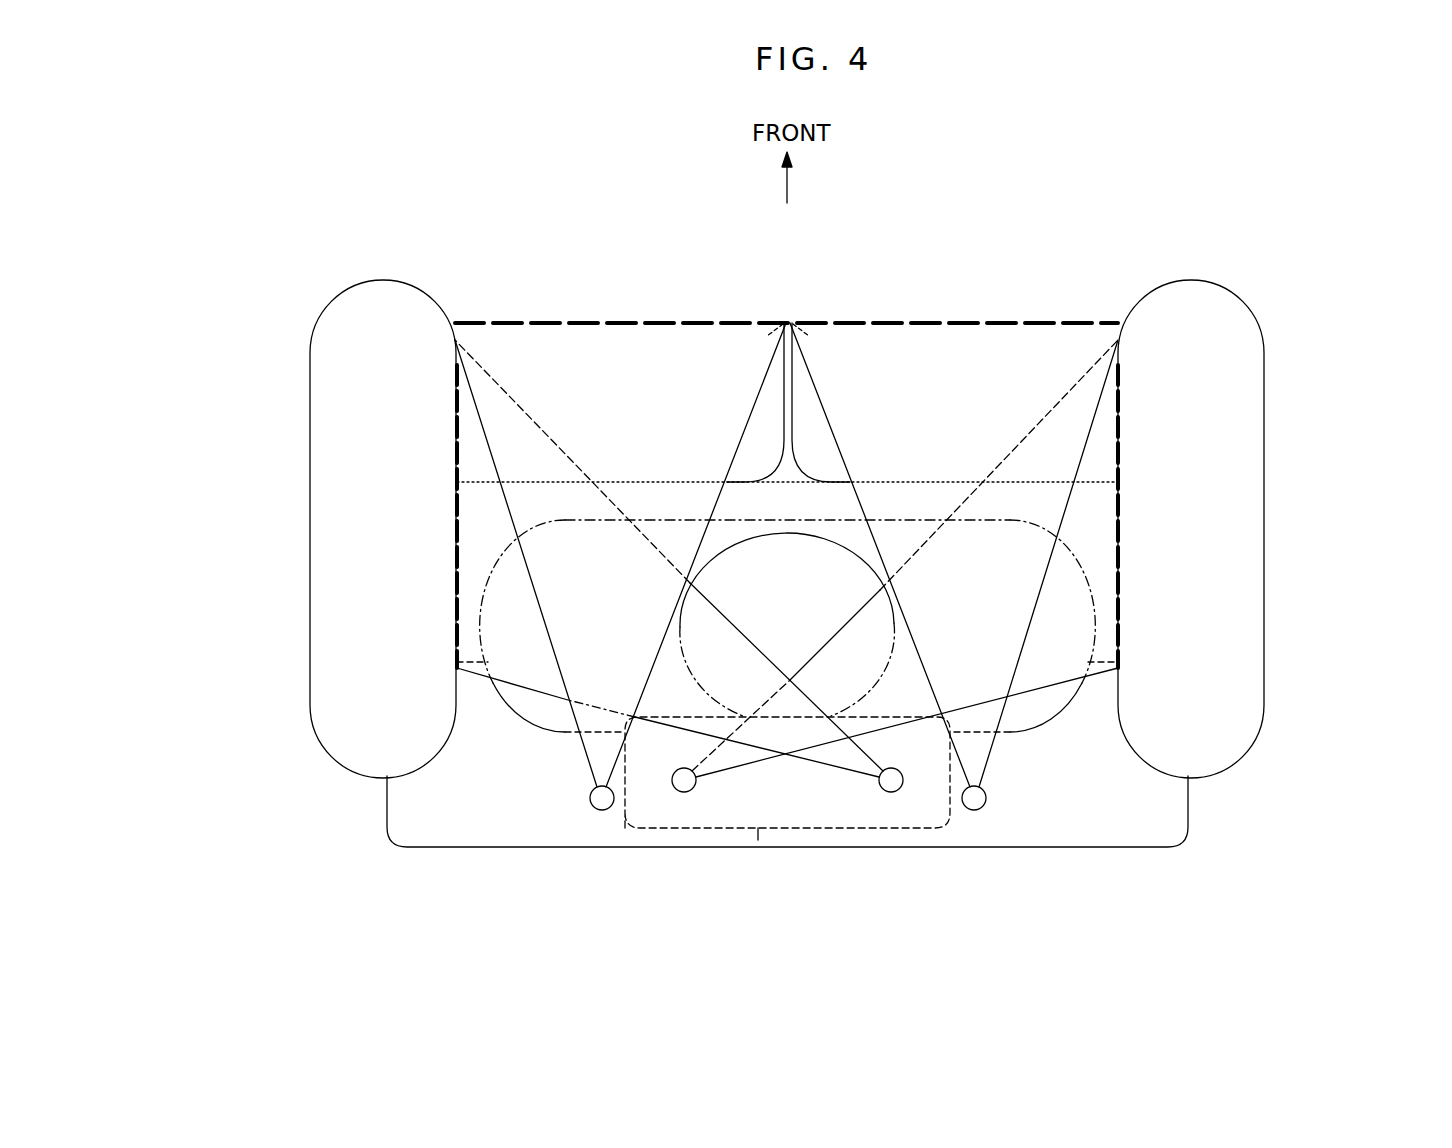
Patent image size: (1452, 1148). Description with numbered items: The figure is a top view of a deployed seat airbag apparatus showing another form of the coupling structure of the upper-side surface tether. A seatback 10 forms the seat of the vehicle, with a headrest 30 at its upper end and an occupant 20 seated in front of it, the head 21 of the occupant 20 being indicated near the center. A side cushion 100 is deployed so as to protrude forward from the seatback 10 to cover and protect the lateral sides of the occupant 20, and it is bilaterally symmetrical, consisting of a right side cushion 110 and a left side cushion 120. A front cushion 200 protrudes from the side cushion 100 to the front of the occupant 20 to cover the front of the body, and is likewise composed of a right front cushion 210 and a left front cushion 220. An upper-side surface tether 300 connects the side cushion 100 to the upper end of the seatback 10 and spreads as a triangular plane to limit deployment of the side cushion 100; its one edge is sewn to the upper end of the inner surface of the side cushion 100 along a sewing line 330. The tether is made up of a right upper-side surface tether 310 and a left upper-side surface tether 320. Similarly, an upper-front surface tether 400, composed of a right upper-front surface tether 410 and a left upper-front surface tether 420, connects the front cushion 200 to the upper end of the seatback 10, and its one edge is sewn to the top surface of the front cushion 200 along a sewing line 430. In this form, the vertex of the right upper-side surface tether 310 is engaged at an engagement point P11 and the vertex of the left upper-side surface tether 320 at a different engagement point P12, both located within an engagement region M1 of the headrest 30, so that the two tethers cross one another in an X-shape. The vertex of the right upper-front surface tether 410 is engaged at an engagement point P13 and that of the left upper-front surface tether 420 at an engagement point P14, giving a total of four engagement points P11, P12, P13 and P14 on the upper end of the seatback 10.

The seatback 10 is at (1058, 803).
The occupant 20 is at (737, 540).
The head 21 is at (838, 605).
The headrest 30 is at (917, 810).
The side cushion 100 is at (792, 529).
The right side cushion 110 is at (1247, 678).
The left side cushion 120 is at (327, 678).
The front cushion 200 is at (789, 350).
The right front cushion 210 is at (808, 423).
The left front cushion 220 is at (767, 423).
The upper-side surface tether 300 is at (785, 607).
The right upper-side surface tether 310 is at (1092, 557).
The left upper-side surface tether 320 is at (483, 557).
The sewing line 330 is at (457, 603).
The upper-front surface tether 400 is at (787, 427).
The right upper-front surface tether 410 is at (1043, 345).
The left upper-front surface tether 420 is at (522, 345).
The sewing line 430 is at (605, 322).
The engagement point P11 is at (684, 792).
The engagement point P12 is at (889, 792).
The engagement point P13 is at (975, 810).
The engagement point P14 is at (602, 810).
The engagement region M1 is at (758, 840).